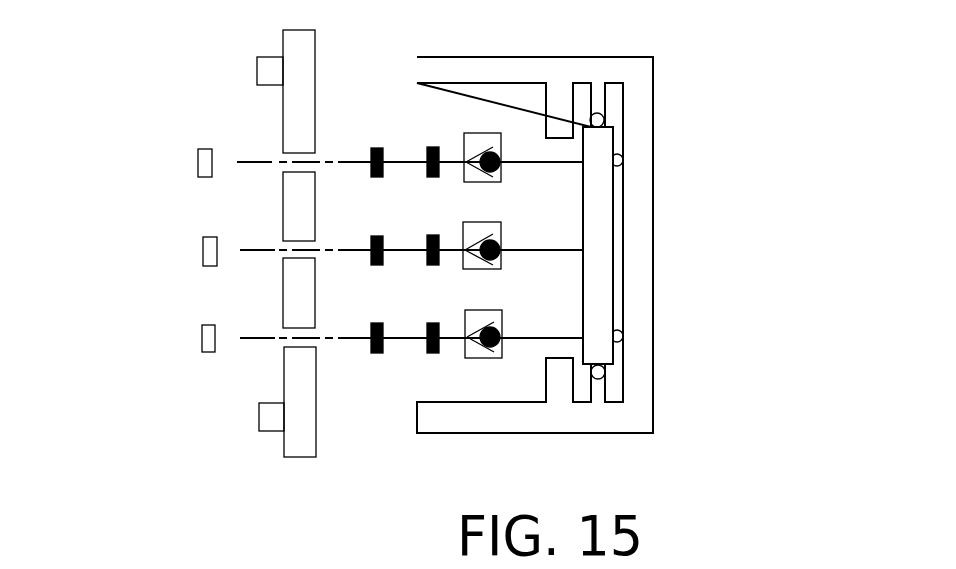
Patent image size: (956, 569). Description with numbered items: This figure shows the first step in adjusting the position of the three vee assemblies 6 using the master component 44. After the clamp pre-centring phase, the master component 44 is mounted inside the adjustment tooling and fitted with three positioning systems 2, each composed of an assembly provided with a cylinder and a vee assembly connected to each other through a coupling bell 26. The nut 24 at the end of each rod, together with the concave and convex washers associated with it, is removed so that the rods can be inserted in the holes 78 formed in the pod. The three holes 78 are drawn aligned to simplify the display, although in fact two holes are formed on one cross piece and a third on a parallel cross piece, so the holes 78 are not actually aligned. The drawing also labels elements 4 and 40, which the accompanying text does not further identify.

The positioning system 2 is at (392, 146).
The conduit 4 is at (557, 248).
The vee assembly 6 is at (453, 247).
The nut 24 is at (200, 163).
The coupling bell 26 is at (463, 133).
The frame 40 is at (298, 448).
The master component 44 is at (603, 208).
The hole 78 is at (290, 153).